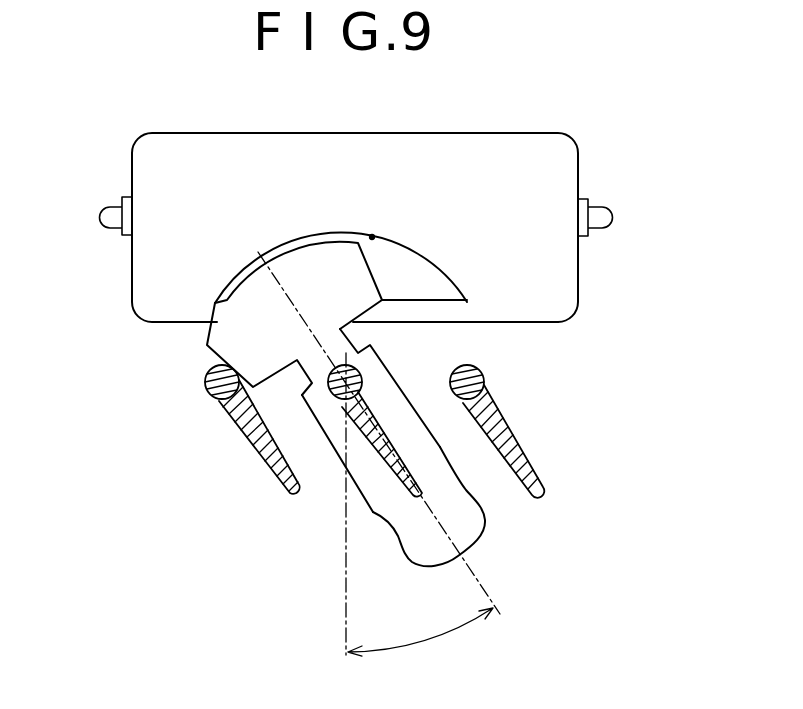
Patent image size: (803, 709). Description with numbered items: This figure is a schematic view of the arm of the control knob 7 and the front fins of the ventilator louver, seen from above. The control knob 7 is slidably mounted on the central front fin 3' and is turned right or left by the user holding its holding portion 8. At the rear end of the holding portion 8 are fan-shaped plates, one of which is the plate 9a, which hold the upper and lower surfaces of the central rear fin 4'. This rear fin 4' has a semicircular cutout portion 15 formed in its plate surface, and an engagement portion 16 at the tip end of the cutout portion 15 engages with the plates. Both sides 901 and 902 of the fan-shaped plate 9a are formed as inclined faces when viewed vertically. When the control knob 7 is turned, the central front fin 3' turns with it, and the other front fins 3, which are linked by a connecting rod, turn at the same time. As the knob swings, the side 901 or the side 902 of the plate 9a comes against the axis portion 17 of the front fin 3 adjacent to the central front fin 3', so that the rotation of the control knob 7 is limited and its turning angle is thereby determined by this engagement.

The central rear fin 4' is at (356, 194).
The semicircular cutout portion 15 is at (376, 235).
The engagement portion 16 is at (389, 318).
The plate 9a is at (250, 297).
The side of plate 901 is at (212, 352).
The side of plate 902 is at (383, 280).
The control knob 7 is at (499, 530).
The holding portion 8 is at (470, 545).
The axis portion 17 is at (205, 385).
The front fin 3 is at (376, 439).
The central front fin 3' is at (351, 444).